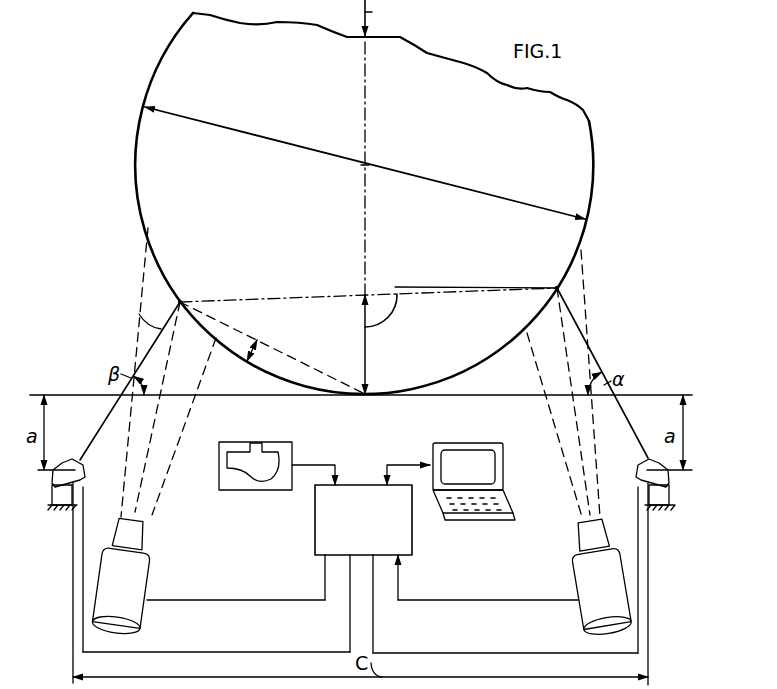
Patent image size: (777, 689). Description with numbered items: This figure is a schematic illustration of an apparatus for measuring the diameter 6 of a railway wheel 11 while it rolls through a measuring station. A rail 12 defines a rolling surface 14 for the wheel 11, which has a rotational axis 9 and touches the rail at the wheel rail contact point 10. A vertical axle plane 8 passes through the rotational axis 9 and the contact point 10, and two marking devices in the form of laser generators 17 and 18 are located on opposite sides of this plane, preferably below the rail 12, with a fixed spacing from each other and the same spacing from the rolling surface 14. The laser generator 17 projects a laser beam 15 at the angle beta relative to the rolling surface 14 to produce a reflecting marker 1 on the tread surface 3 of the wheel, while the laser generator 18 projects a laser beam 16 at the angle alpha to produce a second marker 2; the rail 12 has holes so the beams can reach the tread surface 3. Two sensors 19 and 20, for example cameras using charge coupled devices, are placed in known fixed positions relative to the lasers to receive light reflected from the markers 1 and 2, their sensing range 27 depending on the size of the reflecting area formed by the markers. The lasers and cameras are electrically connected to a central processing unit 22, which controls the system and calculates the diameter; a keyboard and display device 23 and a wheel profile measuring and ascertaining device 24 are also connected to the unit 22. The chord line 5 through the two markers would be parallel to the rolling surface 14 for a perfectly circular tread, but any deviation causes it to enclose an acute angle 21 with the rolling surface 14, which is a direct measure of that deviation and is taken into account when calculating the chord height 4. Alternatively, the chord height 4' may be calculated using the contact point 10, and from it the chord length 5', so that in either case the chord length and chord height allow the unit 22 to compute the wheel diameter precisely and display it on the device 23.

The reflecting marker 1 is at (178, 302).
The reflecting marker 2 is at (557, 288).
The tread surface 3 is at (133, 188).
The chord height 4 is at (374, 344).
The chord height 4' is at (275, 348).
The chord line 5 is at (368, 286).
The chord length 5' is at (272, 348).
The wheel diameter 6 is at (273, 137).
The vertical axle plane 8 is at (365, 71).
The rotational axis 9 is at (365, 160).
The wheel rail contact point 10 is at (366, 396).
The wheel 11 is at (583, 192).
The rail 12 is at (500, 396).
The rolling surface 14 is at (652, 393).
The laser beam 15 is at (139, 314).
The laser beam 16 is at (596, 368).
The laser generator 17 is at (53, 490).
The laser generator 18 is at (670, 490).
The sensor 19 is at (139, 583).
The sensor 20 is at (578, 585).
The acute angle 21 is at (411, 295).
The central processing unit 22 is at (316, 525).
The keyboard and display device 23 is at (462, 521).
The wheel profile measuring and ascertaining device 24 is at (289, 450).
The sensing range 27 is at (124, 449).